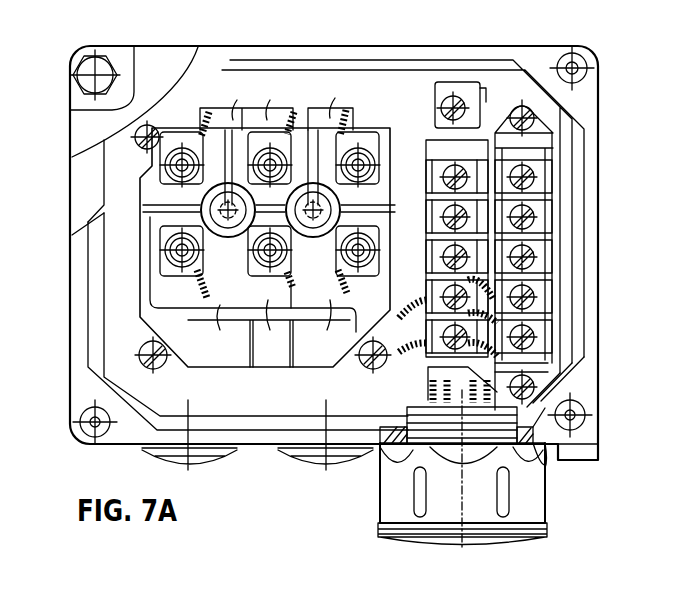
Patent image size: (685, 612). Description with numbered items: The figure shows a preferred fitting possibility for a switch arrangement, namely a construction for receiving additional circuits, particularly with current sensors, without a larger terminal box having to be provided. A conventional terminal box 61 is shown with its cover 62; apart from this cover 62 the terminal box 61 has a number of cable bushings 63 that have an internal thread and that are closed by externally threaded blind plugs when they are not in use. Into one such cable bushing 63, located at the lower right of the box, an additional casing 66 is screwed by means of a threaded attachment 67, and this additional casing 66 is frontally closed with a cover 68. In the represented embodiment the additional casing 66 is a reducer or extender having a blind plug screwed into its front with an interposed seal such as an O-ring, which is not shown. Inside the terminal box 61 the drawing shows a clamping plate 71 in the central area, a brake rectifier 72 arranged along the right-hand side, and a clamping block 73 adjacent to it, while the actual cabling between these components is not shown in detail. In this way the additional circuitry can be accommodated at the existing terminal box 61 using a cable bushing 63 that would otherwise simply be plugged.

The terminal box 61 is at (588, 185).
The cover 62 is at (172, 48).
The cable bushing 63 is at (556, 404).
The additional casing 66 is at (378, 486).
The threaded attachment 67 is at (546, 466).
The cover 68 is at (544, 534).
The clamping plate 71 is at (390, 131).
The brake rectifier 72 is at (556, 137).
The clamping block 73 is at (550, 157).